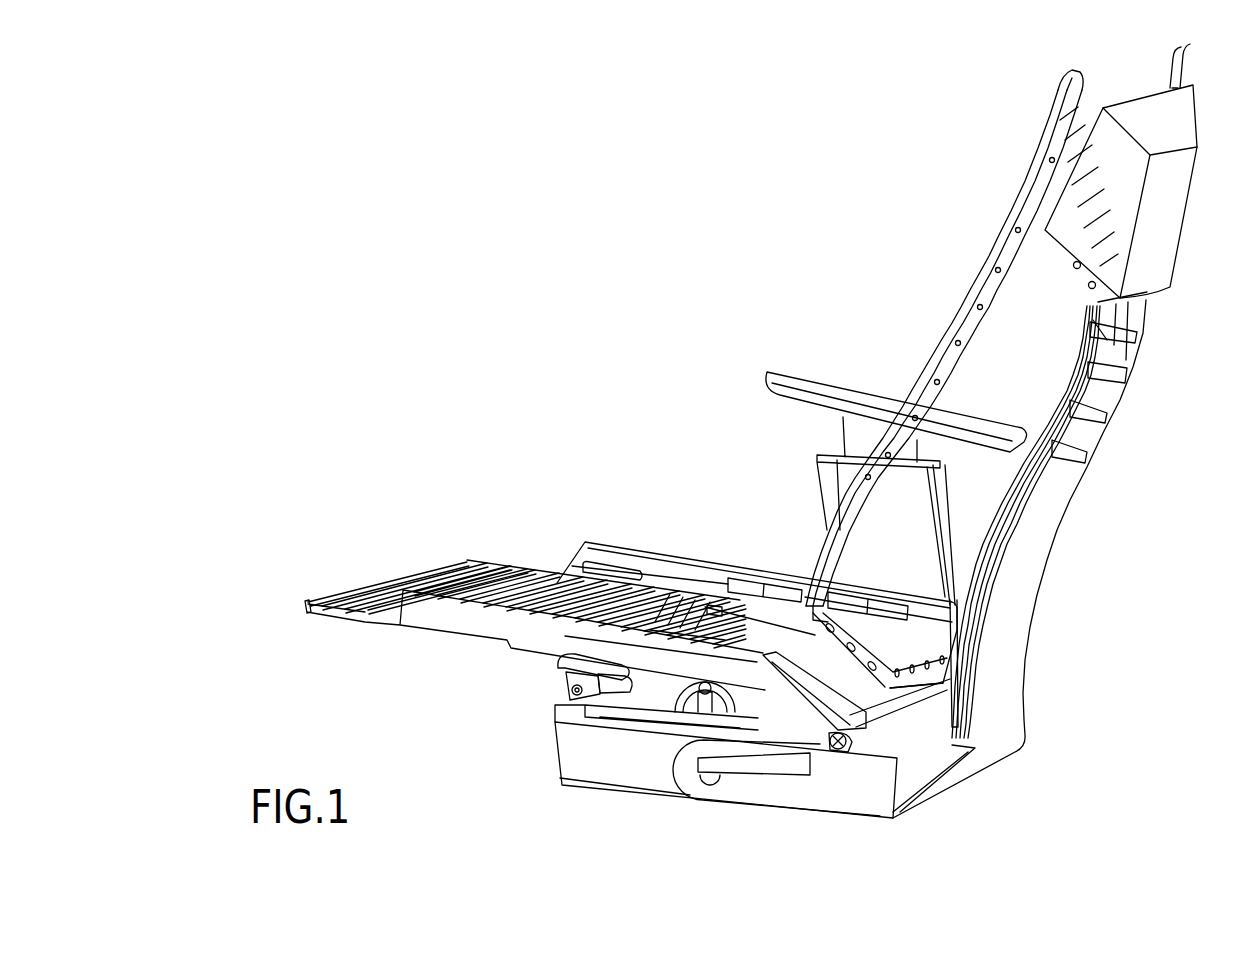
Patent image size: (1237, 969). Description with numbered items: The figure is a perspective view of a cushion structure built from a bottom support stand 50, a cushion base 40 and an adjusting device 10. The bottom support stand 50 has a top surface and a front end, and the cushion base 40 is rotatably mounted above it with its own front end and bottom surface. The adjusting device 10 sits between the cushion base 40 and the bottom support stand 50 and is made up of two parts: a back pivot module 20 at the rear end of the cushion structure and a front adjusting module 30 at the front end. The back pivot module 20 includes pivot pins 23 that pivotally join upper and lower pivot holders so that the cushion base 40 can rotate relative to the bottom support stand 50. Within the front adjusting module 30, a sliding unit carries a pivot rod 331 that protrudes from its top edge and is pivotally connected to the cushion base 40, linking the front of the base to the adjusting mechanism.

The adjusting device 10 is at (548, 680).
The back pivot module 20 is at (852, 760).
The pivot pin 23 is at (838, 750).
The front adjusting module 30 is at (548, 711).
The pivot rod 331 is at (606, 700).
The cushion base 40 is at (632, 522).
The bottom support stand 50 is at (554, 769).